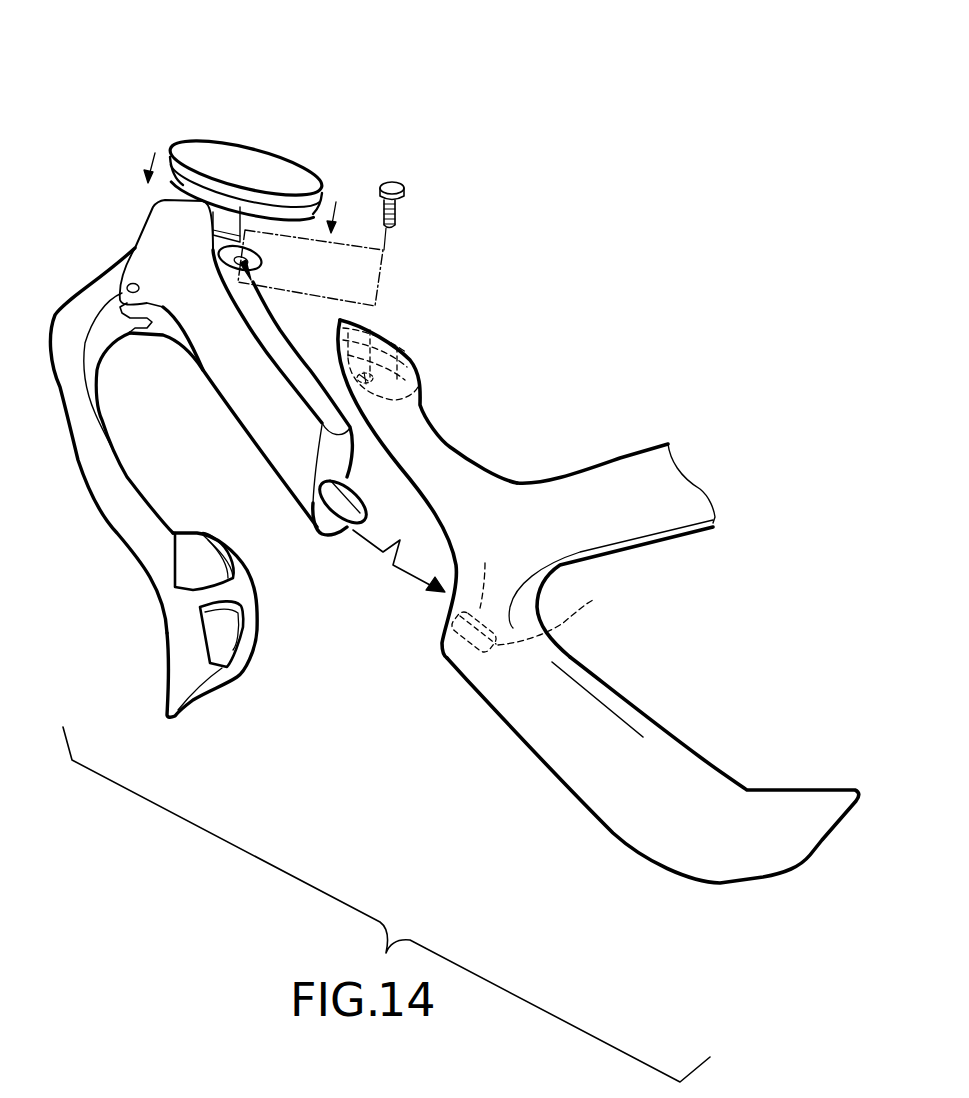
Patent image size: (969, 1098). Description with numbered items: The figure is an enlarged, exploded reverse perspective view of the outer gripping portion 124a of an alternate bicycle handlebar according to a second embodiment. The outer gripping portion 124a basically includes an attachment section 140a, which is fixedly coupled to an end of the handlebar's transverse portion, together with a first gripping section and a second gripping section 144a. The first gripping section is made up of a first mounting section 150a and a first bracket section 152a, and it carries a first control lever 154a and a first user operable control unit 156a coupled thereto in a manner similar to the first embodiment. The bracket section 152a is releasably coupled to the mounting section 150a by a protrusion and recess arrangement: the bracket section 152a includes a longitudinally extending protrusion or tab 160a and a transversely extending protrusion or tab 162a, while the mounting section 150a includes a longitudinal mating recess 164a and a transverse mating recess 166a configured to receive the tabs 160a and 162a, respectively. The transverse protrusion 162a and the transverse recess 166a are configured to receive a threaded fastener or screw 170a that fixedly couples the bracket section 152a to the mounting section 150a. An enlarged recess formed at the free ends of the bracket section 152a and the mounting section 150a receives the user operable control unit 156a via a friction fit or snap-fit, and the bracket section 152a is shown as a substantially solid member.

The outer gripping portion 124a is at (537, 267).
The attachment section 140a is at (600, 460).
The second gripping section 144a is at (627, 680).
The first mounting section 150a is at (433, 423).
The first bracket section 152a is at (147, 223).
The first control lever 154a is at (120, 530).
The first user operable control unit 156a is at (227, 146).
The longitudinally extending protrusion or tab 160a is at (360, 525).
The transversely extending protrusion or tab 162a is at (262, 257).
The longitudinal mating recess 164a is at (580, 606).
The transverse mating recess 166a is at (420, 392).
The threaded fastener or screw 170a is at (397, 186).